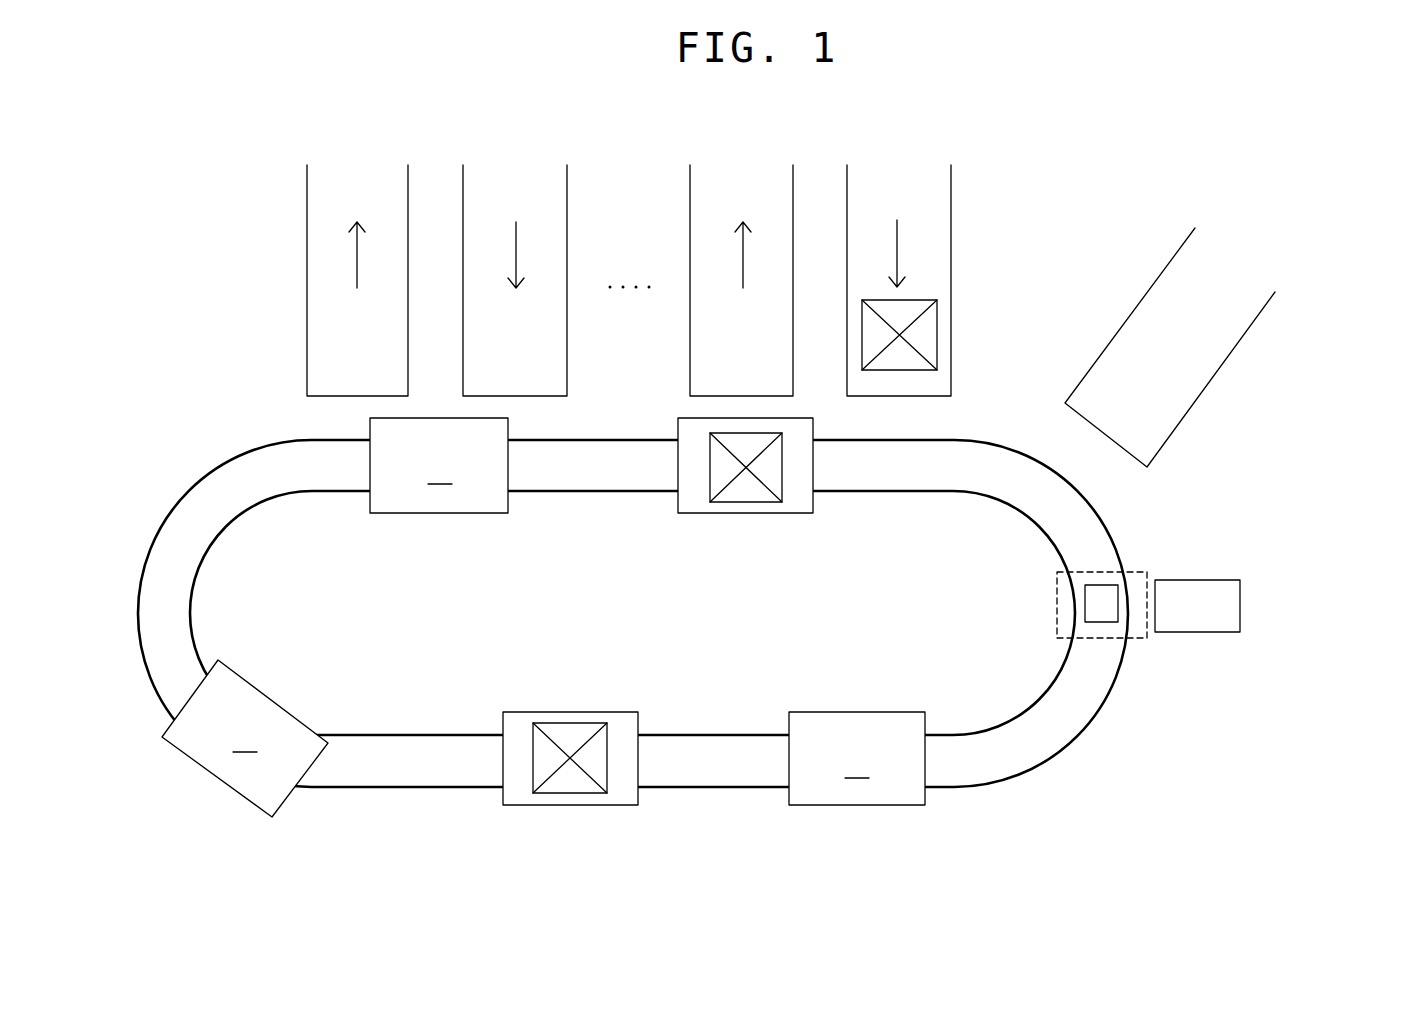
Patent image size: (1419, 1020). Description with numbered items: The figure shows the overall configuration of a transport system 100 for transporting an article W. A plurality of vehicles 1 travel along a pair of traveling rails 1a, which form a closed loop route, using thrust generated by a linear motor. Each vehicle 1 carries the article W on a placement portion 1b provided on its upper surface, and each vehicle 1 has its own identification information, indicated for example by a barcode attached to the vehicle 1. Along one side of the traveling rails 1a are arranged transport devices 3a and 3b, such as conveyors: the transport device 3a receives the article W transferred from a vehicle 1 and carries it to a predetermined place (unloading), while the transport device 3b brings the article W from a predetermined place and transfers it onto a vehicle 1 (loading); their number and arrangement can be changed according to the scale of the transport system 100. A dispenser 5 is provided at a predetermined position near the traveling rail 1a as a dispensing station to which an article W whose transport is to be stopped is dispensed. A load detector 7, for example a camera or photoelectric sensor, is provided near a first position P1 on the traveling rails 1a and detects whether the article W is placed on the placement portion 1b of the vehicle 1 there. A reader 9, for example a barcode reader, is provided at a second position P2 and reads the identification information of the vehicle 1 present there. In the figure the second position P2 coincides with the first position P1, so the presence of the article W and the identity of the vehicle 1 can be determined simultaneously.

The transport system 100 is at (1313, 167).
The vehicle 1 is at (543, 654).
The traveling rails 1a is at (240, 518).
The placement portion 1b is at (693, 502).
The transport device 3a is at (342, 369).
The transport device 3b is at (503, 369).
The dispenser 5 is at (1118, 422).
The load detector 7 is at (1203, 632).
The reader 9 is at (1085, 600).
The article W is at (782, 482).
The first position P1 is at (1158, 578).
The second position P2 is at (1145, 572).